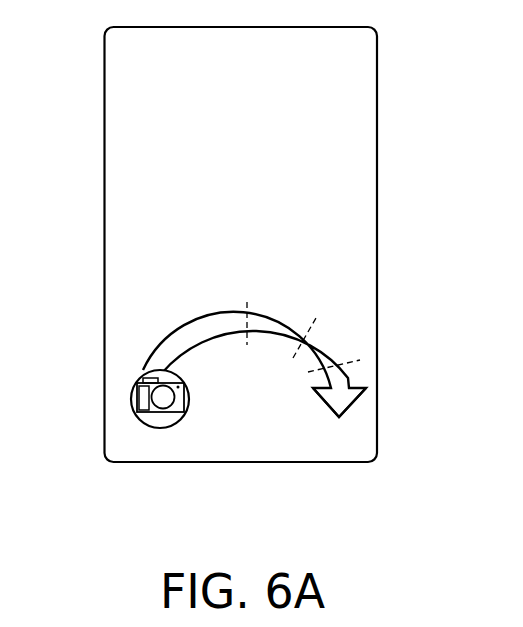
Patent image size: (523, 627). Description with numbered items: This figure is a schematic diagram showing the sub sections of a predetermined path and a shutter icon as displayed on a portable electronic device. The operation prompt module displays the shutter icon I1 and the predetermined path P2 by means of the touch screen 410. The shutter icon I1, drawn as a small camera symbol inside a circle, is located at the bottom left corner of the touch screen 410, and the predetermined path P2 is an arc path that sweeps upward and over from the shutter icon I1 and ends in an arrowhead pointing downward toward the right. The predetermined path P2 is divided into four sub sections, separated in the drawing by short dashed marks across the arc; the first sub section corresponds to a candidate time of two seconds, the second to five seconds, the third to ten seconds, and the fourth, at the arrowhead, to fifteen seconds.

The touch screen 410 is at (377, 65).
The shutter icon I1 is at (131, 400).
The predetermined path P2 is at (352, 378).